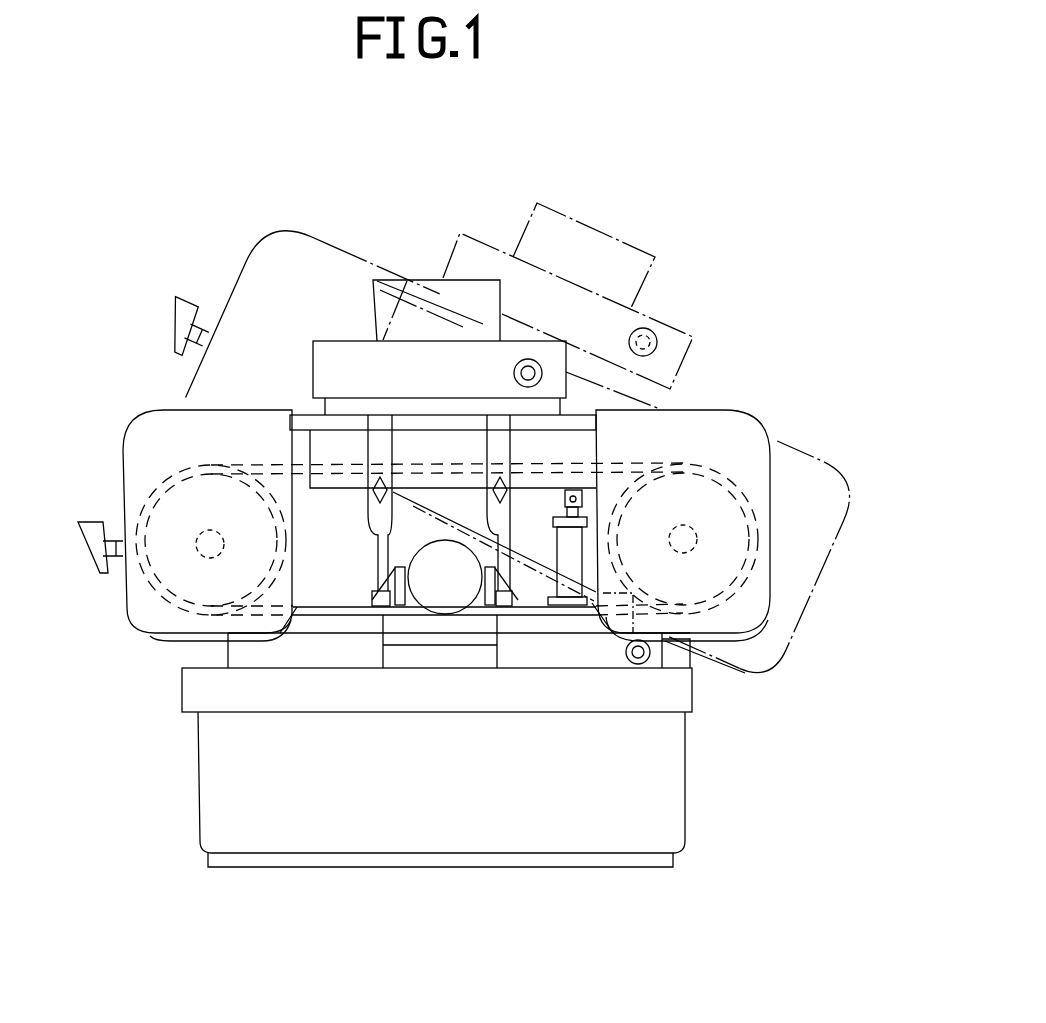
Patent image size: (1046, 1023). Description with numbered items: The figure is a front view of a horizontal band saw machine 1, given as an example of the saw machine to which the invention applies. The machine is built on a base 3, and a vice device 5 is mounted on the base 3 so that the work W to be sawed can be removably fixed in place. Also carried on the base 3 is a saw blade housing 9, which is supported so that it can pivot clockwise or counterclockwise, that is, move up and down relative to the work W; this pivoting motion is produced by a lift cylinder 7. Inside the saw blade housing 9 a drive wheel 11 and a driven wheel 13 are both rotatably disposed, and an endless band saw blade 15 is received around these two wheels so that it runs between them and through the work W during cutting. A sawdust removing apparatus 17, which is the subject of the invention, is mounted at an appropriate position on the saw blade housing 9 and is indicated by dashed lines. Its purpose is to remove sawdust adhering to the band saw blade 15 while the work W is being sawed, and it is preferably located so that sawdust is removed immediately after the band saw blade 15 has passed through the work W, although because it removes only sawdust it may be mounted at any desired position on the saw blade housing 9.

The horizontal band saw machine 1 is at (733, 355).
The base 3 is at (670, 828).
The vice device 5 is at (358, 585).
The lift cylinder 7 is at (568, 557).
The saw blade housing 9 is at (723, 407).
The drive wheel 11 is at (762, 607).
The driven wheel 13 is at (170, 523).
The band saw blade 15 is at (558, 613).
The sawdust removing apparatus 17 is at (633, 587).
The work W is at (425, 565).